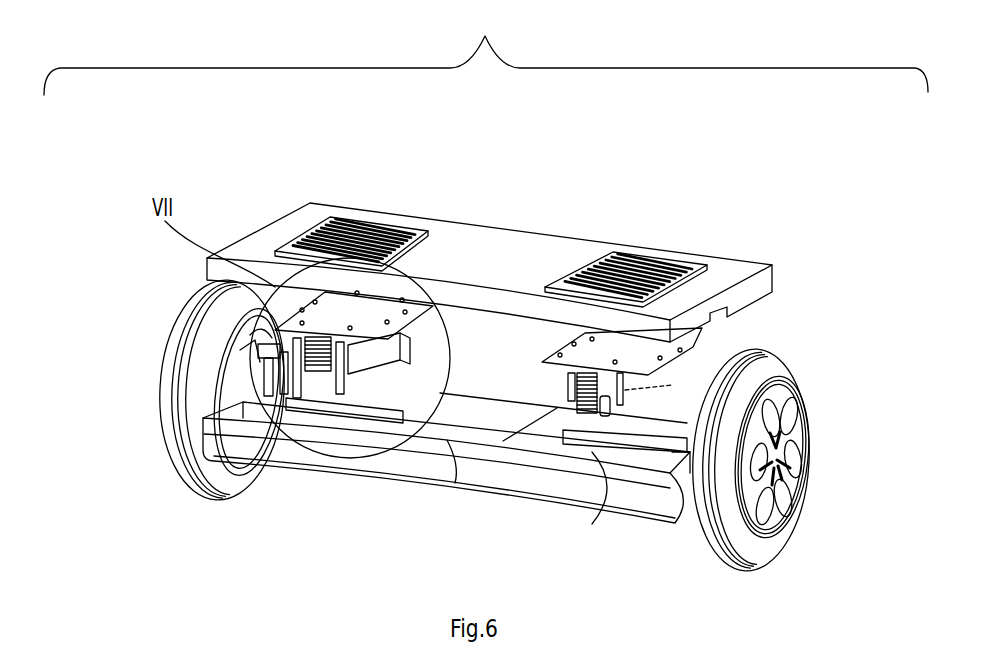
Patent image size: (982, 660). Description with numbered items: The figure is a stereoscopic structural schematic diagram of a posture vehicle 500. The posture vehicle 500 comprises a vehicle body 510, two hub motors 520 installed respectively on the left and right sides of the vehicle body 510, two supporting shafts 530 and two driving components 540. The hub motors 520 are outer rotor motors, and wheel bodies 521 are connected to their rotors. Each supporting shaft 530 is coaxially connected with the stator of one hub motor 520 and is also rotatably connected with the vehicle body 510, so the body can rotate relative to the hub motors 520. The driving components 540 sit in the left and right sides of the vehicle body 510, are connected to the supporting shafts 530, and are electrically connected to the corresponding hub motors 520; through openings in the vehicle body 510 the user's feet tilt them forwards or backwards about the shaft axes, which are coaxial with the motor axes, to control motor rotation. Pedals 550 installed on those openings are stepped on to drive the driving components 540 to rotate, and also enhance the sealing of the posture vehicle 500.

The posture vehicle 500 is at (486, 47).
The vehicle body 510 is at (520, 222).
The hub motor 520 is at (214, 388).
The wheel body 521 is at (190, 315).
The supporting shaft 530 is at (335, 410).
The driving component 540 is at (561, 385).
The pedal 550 is at (365, 221).